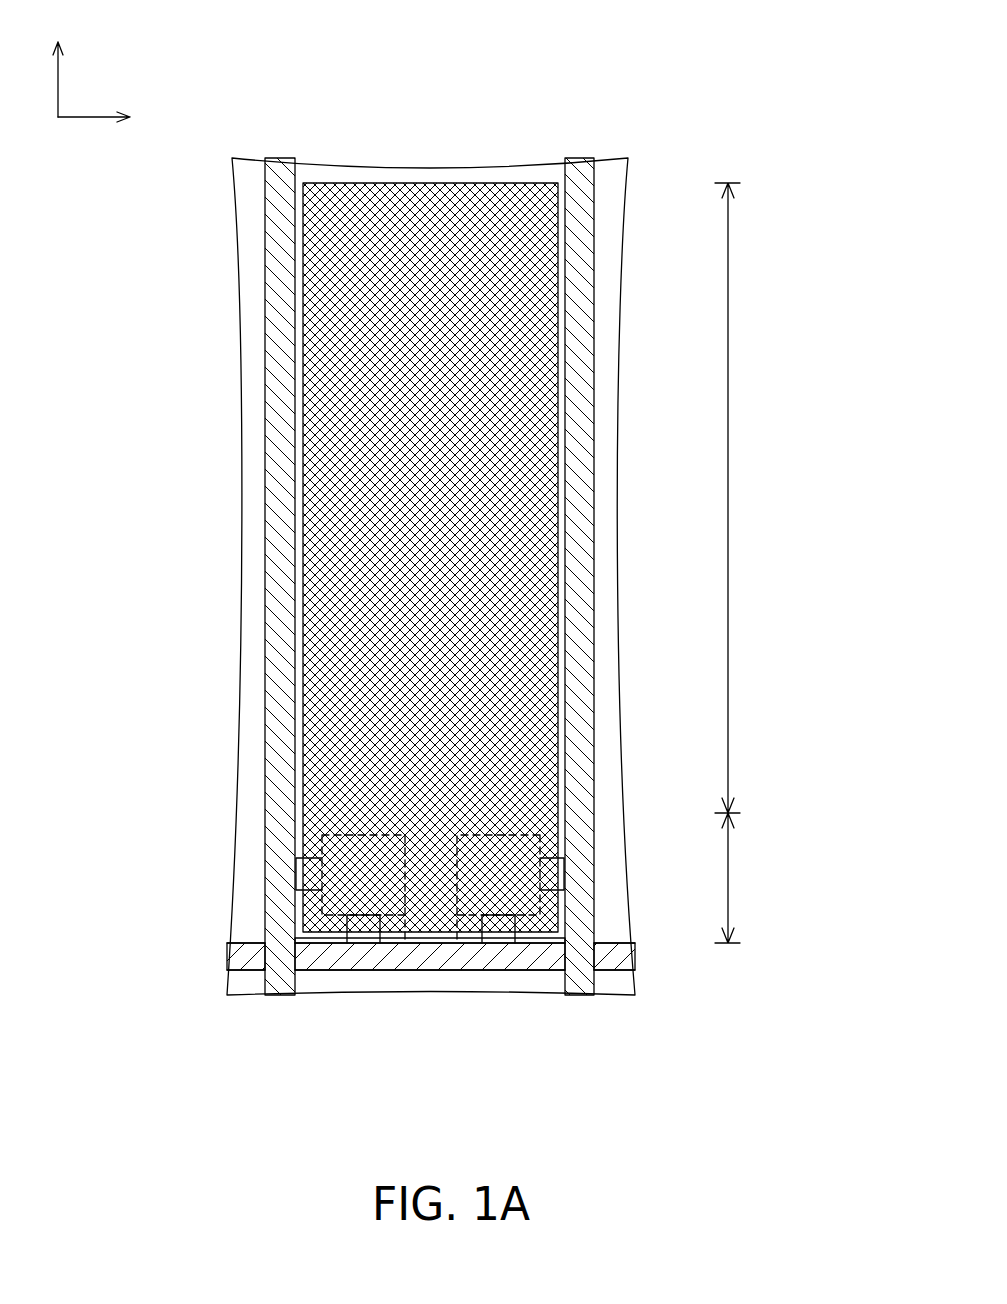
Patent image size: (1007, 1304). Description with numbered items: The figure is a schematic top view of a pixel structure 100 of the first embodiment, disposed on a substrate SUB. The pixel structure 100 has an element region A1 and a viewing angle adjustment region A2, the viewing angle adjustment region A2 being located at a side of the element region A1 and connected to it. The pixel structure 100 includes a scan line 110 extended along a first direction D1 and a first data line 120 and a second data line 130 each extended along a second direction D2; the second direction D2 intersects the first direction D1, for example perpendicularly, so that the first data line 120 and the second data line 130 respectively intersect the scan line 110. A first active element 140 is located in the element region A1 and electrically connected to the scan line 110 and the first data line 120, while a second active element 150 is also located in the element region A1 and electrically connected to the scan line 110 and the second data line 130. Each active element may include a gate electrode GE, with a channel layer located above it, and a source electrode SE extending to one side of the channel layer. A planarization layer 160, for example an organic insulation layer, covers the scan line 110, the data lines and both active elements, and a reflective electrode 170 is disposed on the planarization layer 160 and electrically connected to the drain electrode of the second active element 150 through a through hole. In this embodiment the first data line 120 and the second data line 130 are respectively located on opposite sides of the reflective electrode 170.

The pixel structure 100 is at (620, 1078).
The scan line 110 is at (425, 953).
The first data line 120 is at (282, 978).
The second data line 130 is at (580, 963).
The first active element 140 is at (401, 943).
The second active element 150 is at (457, 943).
The planarization layer 160 is at (387, 942).
The reflective electrode 170 is at (477, 940).
The substrate SUB is at (449, 168).
The source electrode SE is at (564, 878).
The gate electrode GE is at (562, 936).
The element region A1 is at (747, 878).
The viewing angle adjustment region A2 is at (747, 498).
The first direction D1 is at (113, 116).
The second direction D2 is at (59, 59).